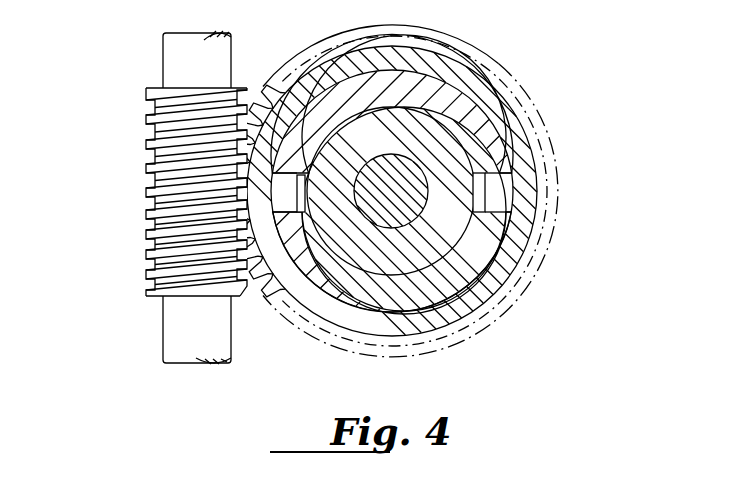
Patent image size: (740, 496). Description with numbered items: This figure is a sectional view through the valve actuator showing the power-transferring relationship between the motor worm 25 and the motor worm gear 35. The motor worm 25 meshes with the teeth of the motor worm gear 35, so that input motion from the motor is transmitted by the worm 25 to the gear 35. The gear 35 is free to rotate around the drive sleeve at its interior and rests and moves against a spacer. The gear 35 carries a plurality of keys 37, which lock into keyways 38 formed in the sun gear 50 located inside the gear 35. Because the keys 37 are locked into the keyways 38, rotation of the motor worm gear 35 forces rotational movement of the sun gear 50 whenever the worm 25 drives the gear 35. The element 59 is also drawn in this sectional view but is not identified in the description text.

The motor worm 25 is at (147, 220).
The motor worm gear 35 is at (470, 73).
The keys 37 is at (485, 195).
The keyways 38 is at (303, 214).
The sun gear 50 is at (394, 296).
The eccentric ring 59 is at (470, 261).